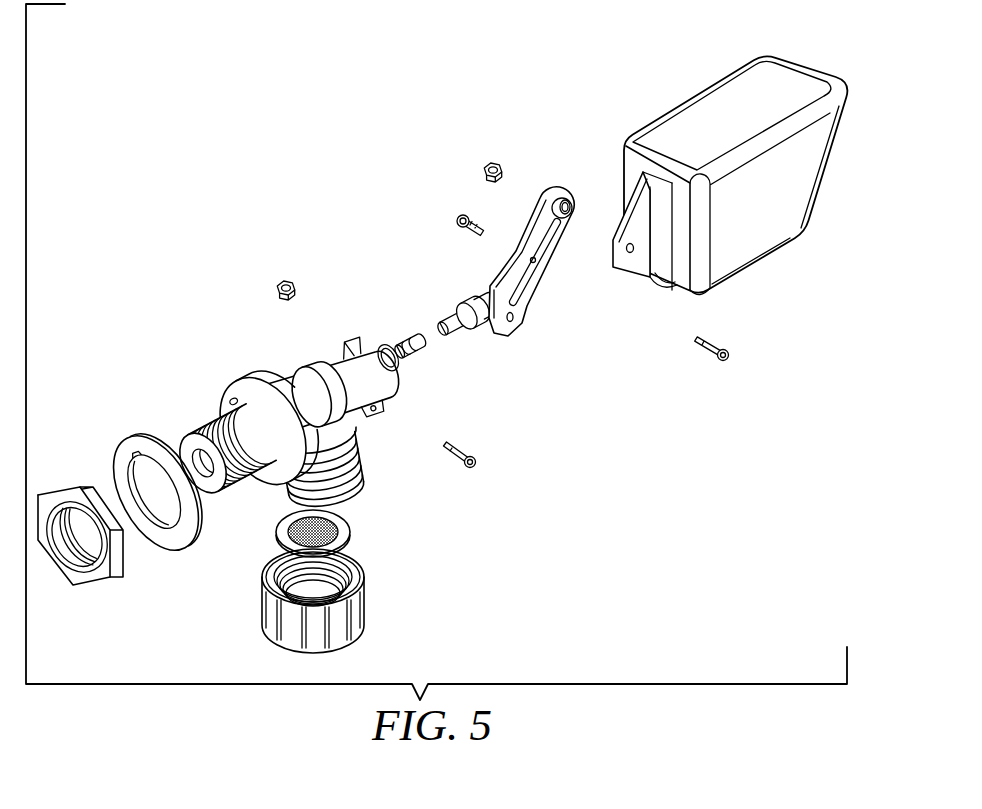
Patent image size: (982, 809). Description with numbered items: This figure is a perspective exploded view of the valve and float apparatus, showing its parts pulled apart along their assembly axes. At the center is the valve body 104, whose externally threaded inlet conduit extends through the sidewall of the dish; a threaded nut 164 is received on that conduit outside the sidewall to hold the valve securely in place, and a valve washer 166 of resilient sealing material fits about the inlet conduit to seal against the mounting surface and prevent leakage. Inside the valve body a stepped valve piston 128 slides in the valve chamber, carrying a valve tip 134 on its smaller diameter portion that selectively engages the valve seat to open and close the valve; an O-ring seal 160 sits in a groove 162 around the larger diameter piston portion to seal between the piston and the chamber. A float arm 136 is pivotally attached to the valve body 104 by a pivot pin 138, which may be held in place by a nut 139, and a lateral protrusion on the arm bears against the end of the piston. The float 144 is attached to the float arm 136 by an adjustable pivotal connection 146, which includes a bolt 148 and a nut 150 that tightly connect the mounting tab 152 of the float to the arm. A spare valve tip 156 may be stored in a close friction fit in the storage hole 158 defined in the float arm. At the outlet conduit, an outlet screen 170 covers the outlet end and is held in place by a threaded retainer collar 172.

The valve body 104 is at (283, 360).
The stepped valve piston 128 is at (467, 315).
The valve tip 134 is at (418, 352).
The float arm 136 is at (547, 222).
The pivot pin 138 is at (471, 466).
The nut 139 is at (284, 278).
The float 144 is at (707, 209).
The adjustable pivotal connection 146 is at (488, 165).
The bolt 148 is at (725, 358).
The nut 150 is at (429, 148).
The mounting tab 152 is at (641, 272).
The spare valve tip 156 is at (462, 216).
The storage hole 158 is at (535, 262).
The O-ring seal 160 is at (386, 343).
The groove 162 is at (458, 322).
The threaded nut 164 is at (88, 490).
The valve washer 166 is at (154, 438).
The outlet screen 170 is at (350, 528).
The threaded retainer collar 172 is at (363, 597).